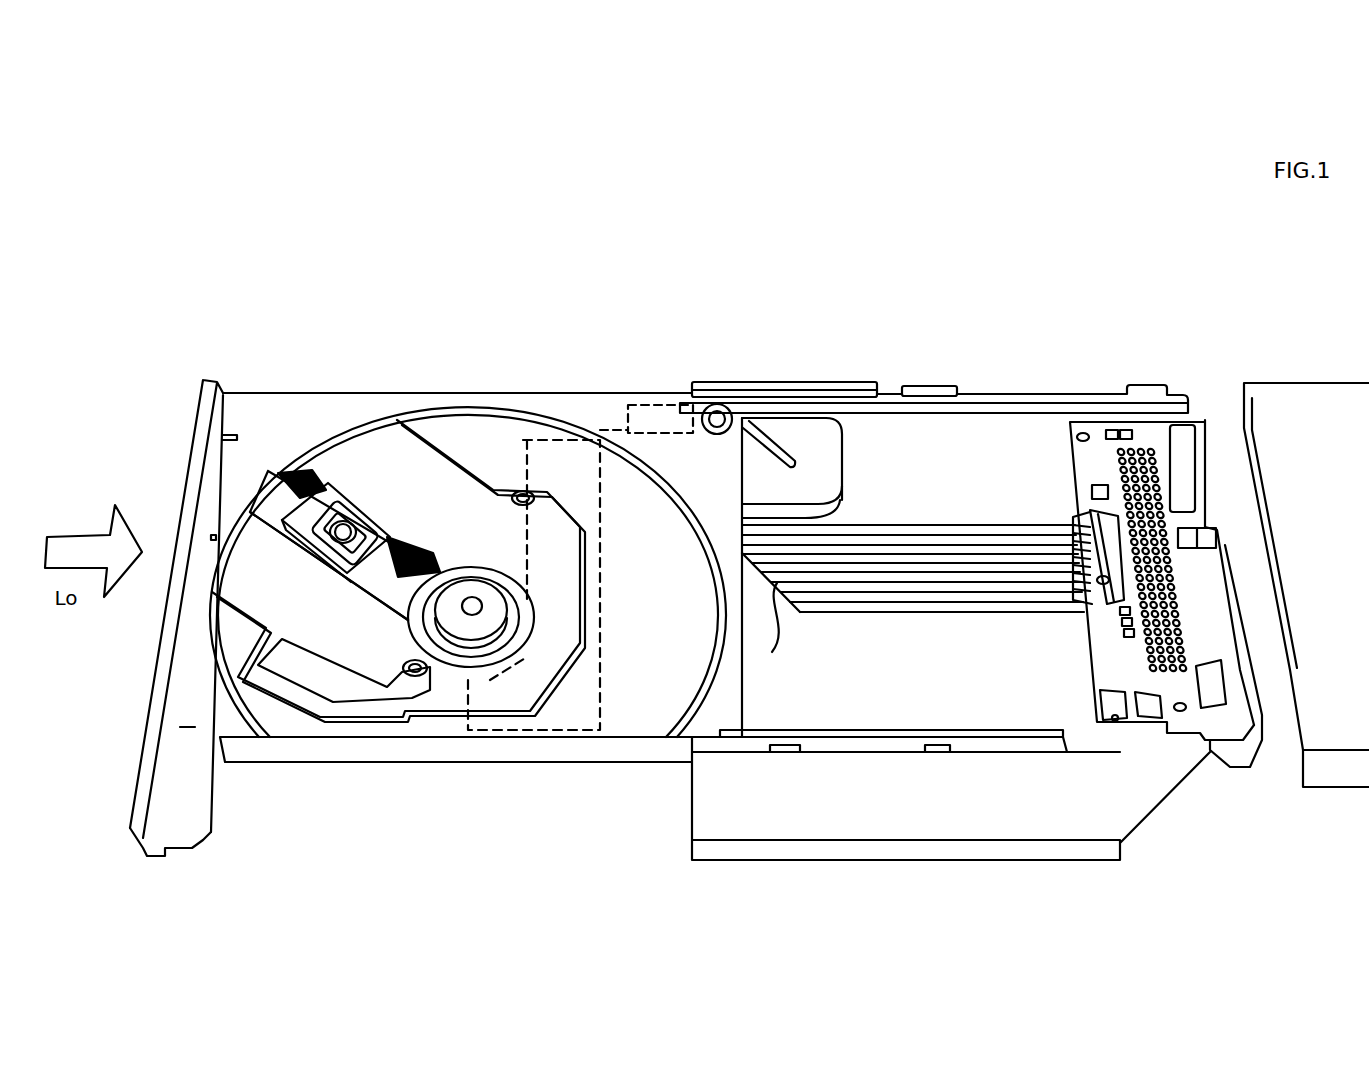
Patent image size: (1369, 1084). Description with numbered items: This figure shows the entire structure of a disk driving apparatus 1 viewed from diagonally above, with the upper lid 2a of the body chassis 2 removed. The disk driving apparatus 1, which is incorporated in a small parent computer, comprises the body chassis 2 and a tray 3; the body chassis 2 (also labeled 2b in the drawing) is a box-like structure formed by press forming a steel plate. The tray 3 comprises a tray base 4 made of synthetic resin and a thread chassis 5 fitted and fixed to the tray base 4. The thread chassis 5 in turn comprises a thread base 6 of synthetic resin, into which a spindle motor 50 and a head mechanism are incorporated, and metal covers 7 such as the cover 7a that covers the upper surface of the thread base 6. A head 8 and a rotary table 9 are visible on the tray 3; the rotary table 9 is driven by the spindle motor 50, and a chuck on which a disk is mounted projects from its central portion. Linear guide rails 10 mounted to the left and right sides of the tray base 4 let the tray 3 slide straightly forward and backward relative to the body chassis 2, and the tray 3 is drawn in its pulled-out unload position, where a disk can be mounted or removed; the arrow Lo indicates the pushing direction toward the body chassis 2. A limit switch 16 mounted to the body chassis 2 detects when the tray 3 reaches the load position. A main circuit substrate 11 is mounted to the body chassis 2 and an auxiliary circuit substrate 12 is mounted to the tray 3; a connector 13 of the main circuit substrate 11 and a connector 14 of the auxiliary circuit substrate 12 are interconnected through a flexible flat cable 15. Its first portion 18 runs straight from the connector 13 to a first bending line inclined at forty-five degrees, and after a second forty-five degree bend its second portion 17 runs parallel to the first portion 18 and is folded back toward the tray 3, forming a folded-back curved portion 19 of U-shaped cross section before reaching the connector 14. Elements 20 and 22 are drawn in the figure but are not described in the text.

The disk driving apparatus 1 is at (805, 178).
The body chassis 2 is at (1024, 383).
The upper lid 2a is at (1300, 418).
The lower casing 2b is at (951, 795).
The tray 3 is at (411, 366).
The tray base 4 is at (252, 408).
The thread chassis 5 is at (398, 712).
The thread base 6 is at (313, 690).
The metal cover 7 is at (432, 708).
The metal cover 7a is at (401, 573).
The head 8 is at (357, 517).
The rotary table 9 is at (462, 583).
The linear guide rails 10 is at (884, 400).
The main circuit substrate 11 is at (1205, 745).
The auxiliary circuit substrate 12 is at (524, 440).
The connector 13 is at (1108, 525).
The connector 14 is at (600, 440).
The flexible flat cable 15 is at (888, 620).
The limit switch 16 is at (1113, 725).
The second portion 17 is at (812, 487).
The first portion 18 is at (998, 585).
The folded-back curved portion 19 is at (852, 470).
The link lever 20 is at (668, 393).
The gear lever 22 is at (770, 395).
The spindle motor 50 is at (420, 628).